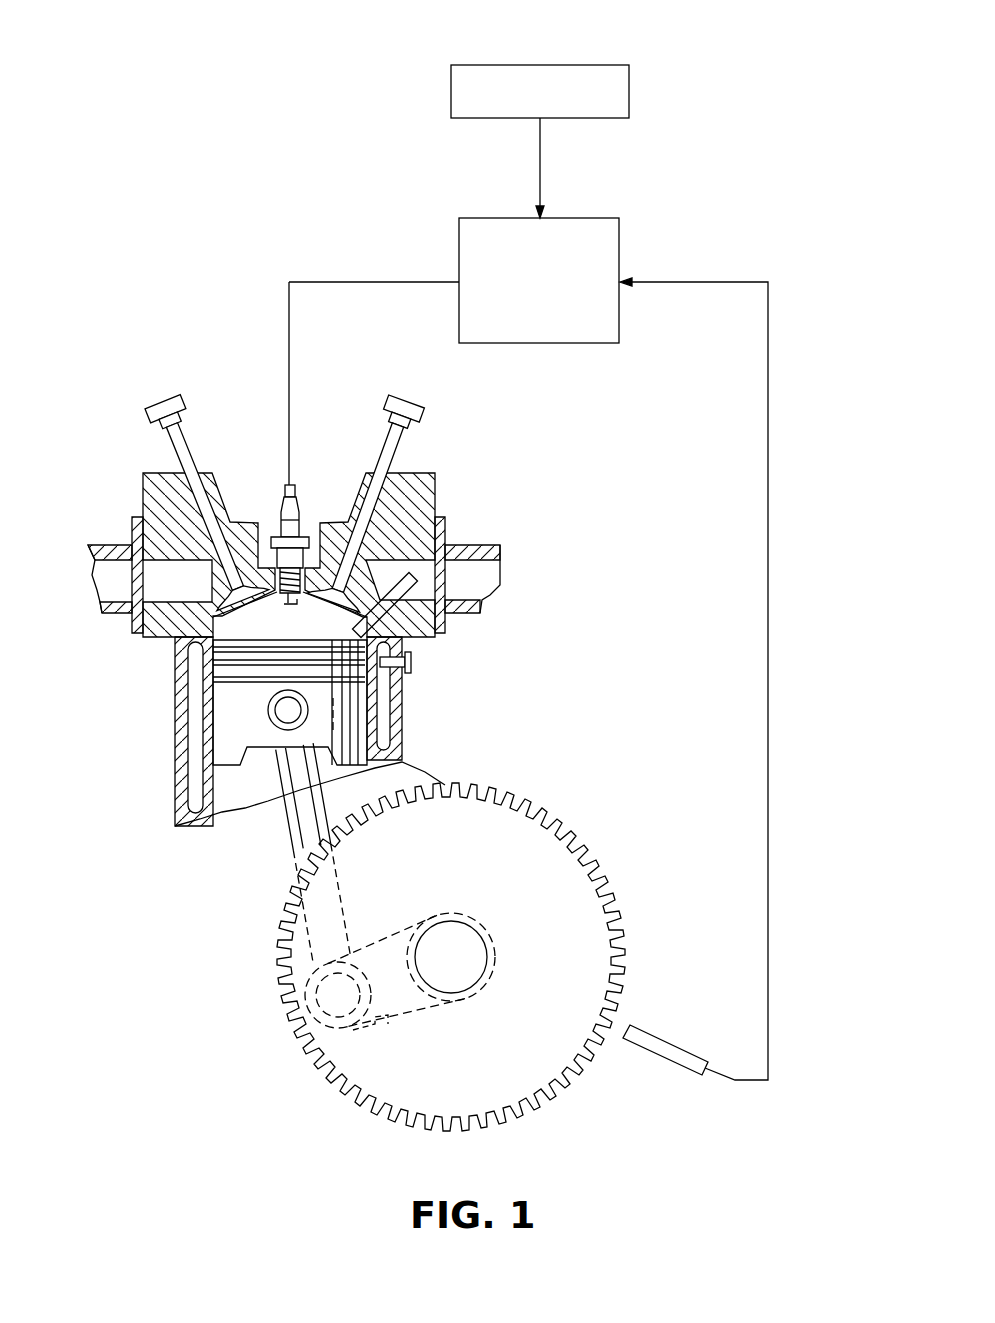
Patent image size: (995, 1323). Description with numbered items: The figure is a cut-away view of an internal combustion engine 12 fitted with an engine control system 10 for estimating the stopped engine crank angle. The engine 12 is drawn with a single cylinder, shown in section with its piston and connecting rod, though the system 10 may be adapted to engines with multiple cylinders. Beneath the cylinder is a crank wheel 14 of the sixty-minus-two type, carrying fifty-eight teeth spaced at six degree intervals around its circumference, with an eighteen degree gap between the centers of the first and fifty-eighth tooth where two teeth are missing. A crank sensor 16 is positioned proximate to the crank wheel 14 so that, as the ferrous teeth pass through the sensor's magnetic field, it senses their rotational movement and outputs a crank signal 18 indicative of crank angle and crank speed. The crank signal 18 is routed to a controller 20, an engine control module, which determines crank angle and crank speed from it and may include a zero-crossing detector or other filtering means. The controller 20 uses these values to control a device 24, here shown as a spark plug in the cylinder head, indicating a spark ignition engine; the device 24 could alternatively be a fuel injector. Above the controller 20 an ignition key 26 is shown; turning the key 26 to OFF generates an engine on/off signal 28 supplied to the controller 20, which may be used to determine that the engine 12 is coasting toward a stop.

The engine control system 10 is at (301, 143).
The internal combustion engine 12 is at (97, 440).
The crank wheel 14 is at (572, 790).
The crank sensor 16 is at (655, 1057).
The crank signal 18 is at (757, 264).
The controller 20 is at (470, 218).
The device 24 is at (283, 490).
The ignition key 26 is at (460, 64).
The engine on/off signal 28 is at (540, 178).